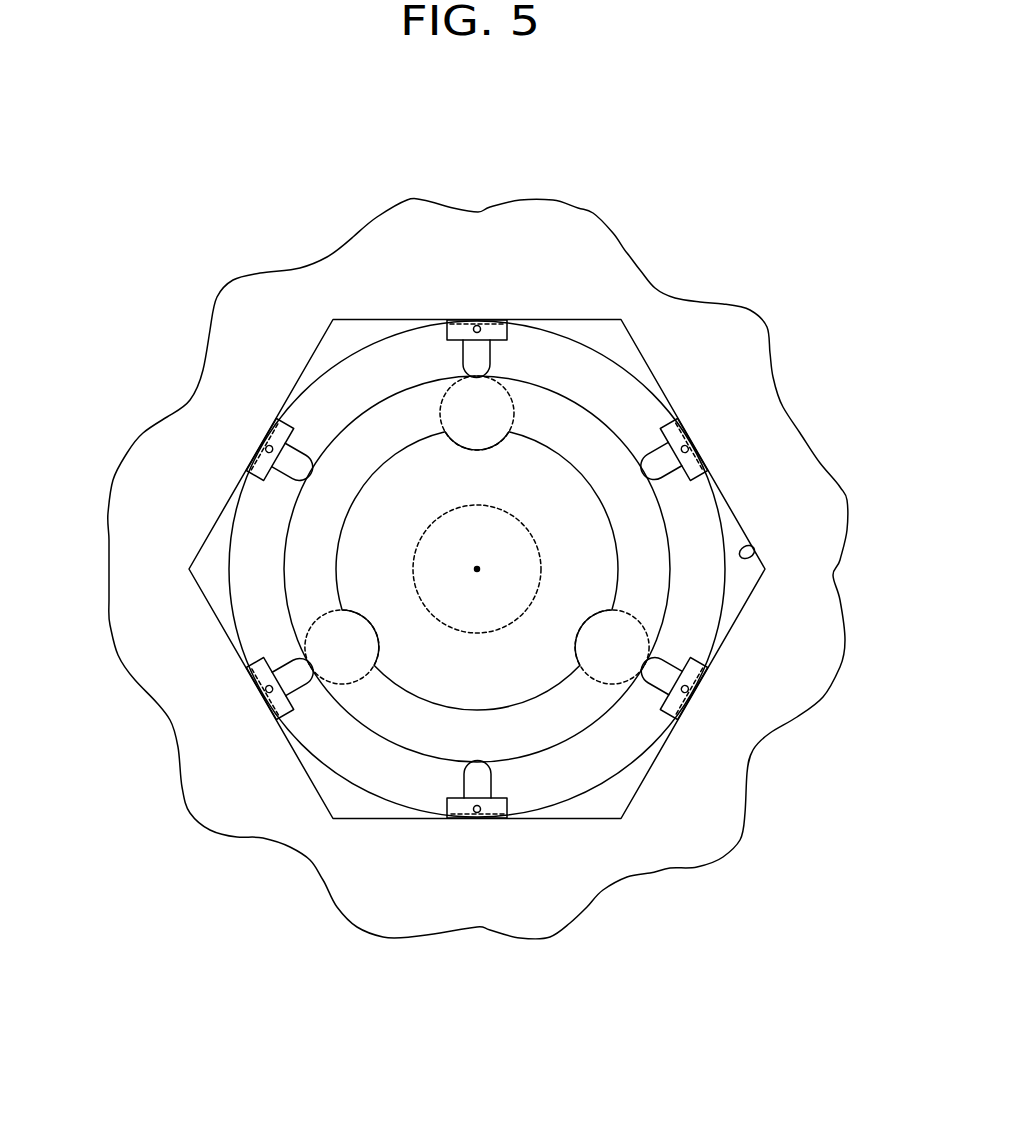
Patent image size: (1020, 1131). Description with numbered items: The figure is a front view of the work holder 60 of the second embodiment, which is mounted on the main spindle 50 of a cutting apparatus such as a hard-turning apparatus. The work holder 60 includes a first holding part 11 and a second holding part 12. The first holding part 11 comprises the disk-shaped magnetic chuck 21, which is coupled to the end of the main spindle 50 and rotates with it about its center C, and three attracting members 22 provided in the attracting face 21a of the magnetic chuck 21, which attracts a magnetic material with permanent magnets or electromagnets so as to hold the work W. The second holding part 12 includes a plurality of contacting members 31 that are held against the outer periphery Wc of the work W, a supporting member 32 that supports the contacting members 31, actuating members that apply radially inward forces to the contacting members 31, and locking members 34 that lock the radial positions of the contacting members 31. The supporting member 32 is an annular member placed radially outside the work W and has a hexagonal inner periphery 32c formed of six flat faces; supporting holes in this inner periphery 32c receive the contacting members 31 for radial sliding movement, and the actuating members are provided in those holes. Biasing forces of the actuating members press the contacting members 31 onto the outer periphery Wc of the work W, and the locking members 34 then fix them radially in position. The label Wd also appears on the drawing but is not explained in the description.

The first holding part 11 is at (335, 338).
The second holding part 12 is at (502, 522).
The magnetic chuck 21 is at (477, 505).
The attracting face 21a is at (370, 377).
The attracting members 22 is at (442, 407).
The contacting members 31 is at (660, 460).
The supporting member 32 is at (195, 723).
The inner periphery 32c is at (760, 559).
The locking members 34 is at (492, 330).
The main spindle 50 is at (519, 630).
The work holder 60 is at (476, 522).
The work W is at (587, 569).
The outer periphery of the work Wc is at (670, 589).
The workpiece inner edge Wd is at (550, 449).
The center C is at (477, 569).